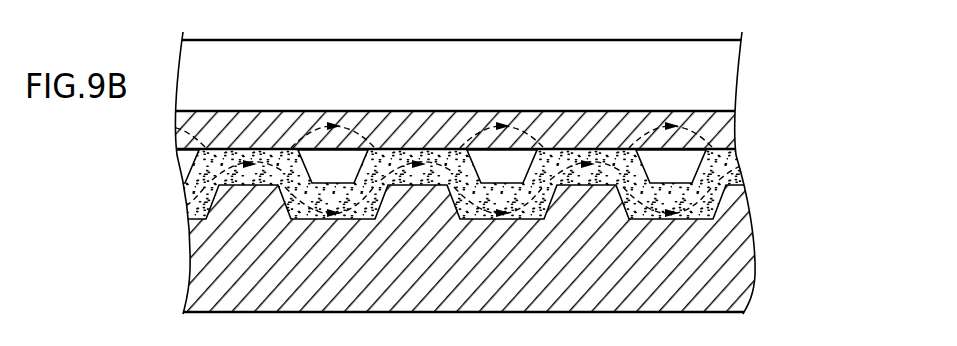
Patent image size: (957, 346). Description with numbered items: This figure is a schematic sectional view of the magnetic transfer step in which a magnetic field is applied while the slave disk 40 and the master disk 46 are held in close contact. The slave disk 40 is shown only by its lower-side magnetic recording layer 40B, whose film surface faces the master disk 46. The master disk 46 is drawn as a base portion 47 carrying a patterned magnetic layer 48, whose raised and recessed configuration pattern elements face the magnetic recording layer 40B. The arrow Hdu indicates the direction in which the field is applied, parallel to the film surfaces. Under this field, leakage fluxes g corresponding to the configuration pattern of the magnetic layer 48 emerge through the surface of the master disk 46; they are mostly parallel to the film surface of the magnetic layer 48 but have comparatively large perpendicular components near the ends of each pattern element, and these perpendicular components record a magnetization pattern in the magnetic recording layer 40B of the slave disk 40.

The slave disk 40 is at (720, 78).
The magnetic recording layer 40B is at (722, 124).
The master disk 46 is at (486, 230).
The substrate / base layer 47 is at (722, 248).
The magnetic layer 48 is at (743, 177).
The leakage fluxes g is at (320, 127).
The uniaxial anisotropy field direction Hdu is at (161, 164).